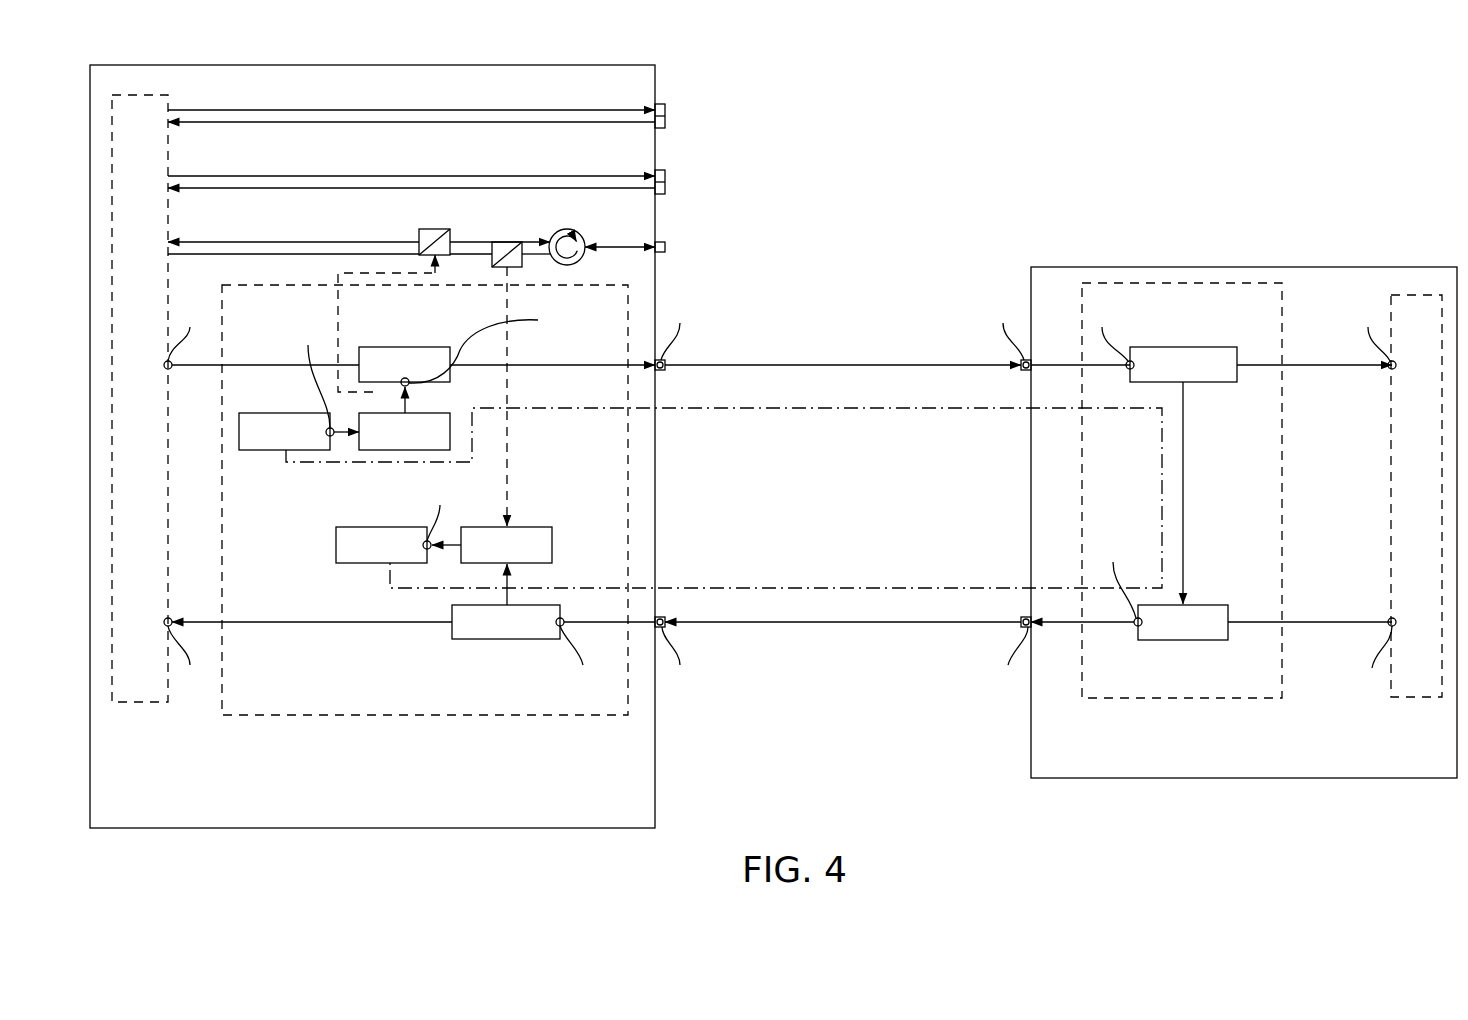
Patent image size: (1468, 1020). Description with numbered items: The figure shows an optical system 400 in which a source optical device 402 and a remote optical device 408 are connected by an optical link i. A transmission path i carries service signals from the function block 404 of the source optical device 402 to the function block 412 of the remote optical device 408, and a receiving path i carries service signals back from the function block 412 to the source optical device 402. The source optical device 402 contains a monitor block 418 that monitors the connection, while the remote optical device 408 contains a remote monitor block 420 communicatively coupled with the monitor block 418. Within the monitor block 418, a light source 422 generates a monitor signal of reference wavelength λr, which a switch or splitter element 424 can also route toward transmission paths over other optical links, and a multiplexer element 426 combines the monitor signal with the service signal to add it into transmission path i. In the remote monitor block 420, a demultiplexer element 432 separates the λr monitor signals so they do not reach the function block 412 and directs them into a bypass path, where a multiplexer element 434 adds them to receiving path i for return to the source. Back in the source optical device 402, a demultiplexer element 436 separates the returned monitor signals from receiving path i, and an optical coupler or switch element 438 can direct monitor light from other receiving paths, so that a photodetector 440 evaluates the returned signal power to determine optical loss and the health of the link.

The optical system 400 is at (1258, 60).
The source optical device 402 is at (655, 800).
The function block 404 is at (140, 92).
The remote optical device 408 is at (1031, 748).
The function block 412 is at (1415, 293).
The monitor block 418 is at (423, 716).
The remote monitor block 420 is at (1282, 672).
The light source 422 is at (272, 413).
The switch element and/or splitter element 424 is at (450, 432).
The multiplexer element 426 is at (405, 347).
The demultiplexer element 432 is at (1237, 372).
The multiplexer element 434 is at (1228, 612).
The demultiplexer element 436 is at (507, 639).
The optical coupler or switch element 438 is at (552, 540).
The photodetector 440 is at (336, 543).